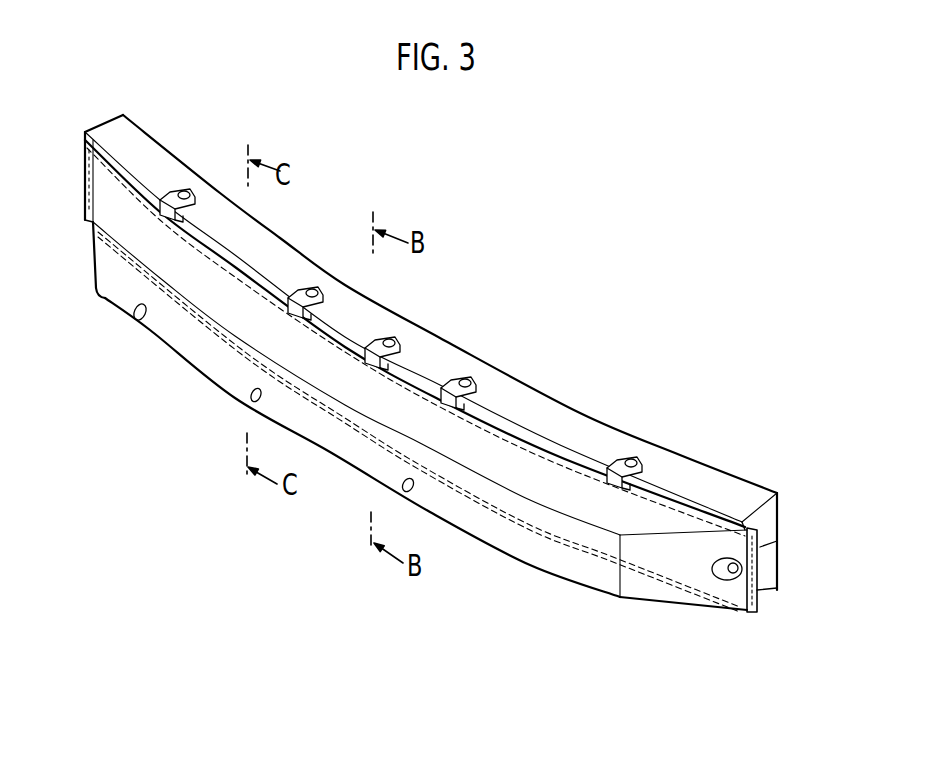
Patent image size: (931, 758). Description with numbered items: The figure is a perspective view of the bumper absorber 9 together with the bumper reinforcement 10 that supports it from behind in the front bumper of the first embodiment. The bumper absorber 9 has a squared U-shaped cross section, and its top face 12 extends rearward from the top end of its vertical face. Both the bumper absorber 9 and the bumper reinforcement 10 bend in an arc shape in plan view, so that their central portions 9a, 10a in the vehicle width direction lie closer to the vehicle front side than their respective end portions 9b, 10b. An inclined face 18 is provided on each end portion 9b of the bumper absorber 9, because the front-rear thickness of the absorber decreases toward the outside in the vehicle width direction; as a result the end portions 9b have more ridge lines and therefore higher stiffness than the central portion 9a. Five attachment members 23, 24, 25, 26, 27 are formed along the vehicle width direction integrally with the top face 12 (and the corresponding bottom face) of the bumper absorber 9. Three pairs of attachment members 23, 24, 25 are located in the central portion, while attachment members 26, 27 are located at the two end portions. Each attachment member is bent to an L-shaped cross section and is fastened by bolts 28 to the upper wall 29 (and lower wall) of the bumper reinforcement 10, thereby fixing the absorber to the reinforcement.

The bumper absorber 9 is at (518, 565).
The central portion of the bumper absorber 9a is at (343, 458).
The end portion of the bumper absorber 9b is at (113, 293).
The bumper reinforcement 10 is at (221, 190).
The central portion of the bumper reinforcement 10a is at (422, 352).
The end portion of the bumper reinforcement 10b is at (135, 130).
The top face 12 is at (210, 293).
The inclined face 18 is at (666, 600).
The attachment member 23 is at (290, 301).
The attachment member 24 is at (371, 346).
The attachment member 25 is at (448, 389).
The attachment member 26 is at (167, 197).
The attachment member 27 is at (618, 466).
The bolt 28 is at (636, 457).
The upper wall 29 is at (705, 470).